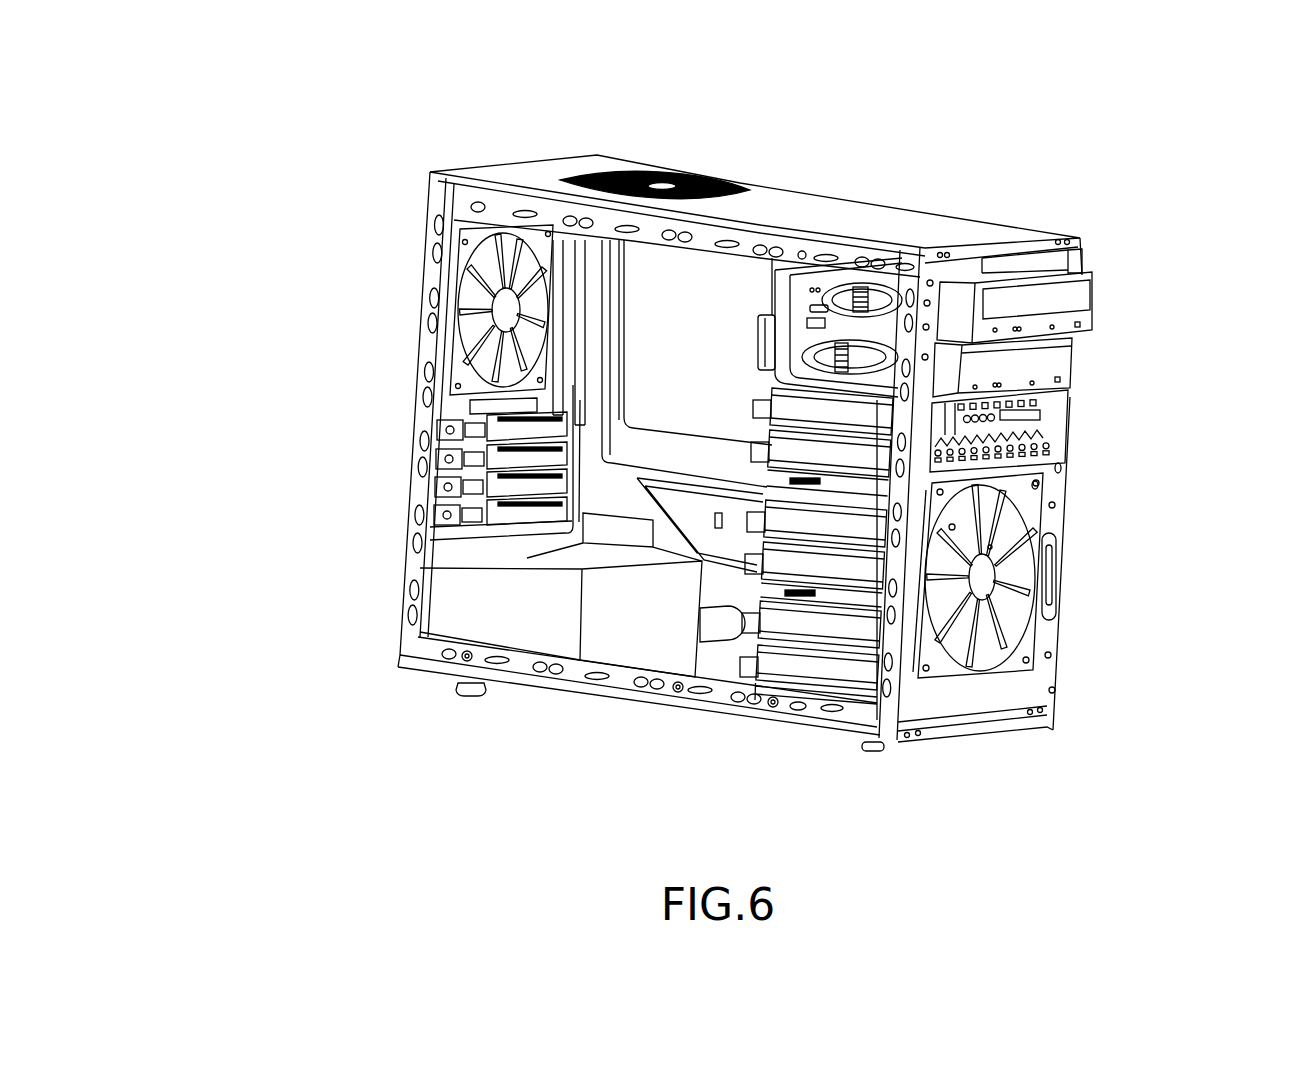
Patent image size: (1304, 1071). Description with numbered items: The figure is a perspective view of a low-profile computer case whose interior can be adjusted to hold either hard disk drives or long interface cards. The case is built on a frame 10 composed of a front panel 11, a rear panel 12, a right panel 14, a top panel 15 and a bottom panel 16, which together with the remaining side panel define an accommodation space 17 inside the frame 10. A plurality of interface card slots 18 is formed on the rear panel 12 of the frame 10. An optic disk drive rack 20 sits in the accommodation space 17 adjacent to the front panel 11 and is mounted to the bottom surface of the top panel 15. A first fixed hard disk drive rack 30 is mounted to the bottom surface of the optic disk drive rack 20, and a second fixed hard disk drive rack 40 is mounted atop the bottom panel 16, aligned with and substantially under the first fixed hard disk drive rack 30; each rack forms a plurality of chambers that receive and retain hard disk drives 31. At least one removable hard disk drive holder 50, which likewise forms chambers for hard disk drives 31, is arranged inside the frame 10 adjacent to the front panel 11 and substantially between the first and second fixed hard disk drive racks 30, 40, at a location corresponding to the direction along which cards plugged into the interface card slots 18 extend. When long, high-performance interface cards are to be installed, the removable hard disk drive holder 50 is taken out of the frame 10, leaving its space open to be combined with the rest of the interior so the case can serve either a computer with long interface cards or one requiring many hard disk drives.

The frame 10 is at (405, 412).
The front panel 11 is at (1065, 258).
The rear panel 12 is at (447, 403).
The right panel 14 is at (655, 310).
The top panel 15 is at (857, 207).
The bottom panel 16 is at (655, 700).
The accommodation space 17 is at (637, 457).
The interface card slots 18 is at (465, 513).
The optic disk drive rack 20 is at (810, 290).
The first fixed hard disk drive rack 30 is at (792, 383).
The hard disk drives 31 is at (843, 420).
The second fixed hard disk drive rack 40 is at (763, 657).
The removable hard disk drive holder 50 is at (905, 502).